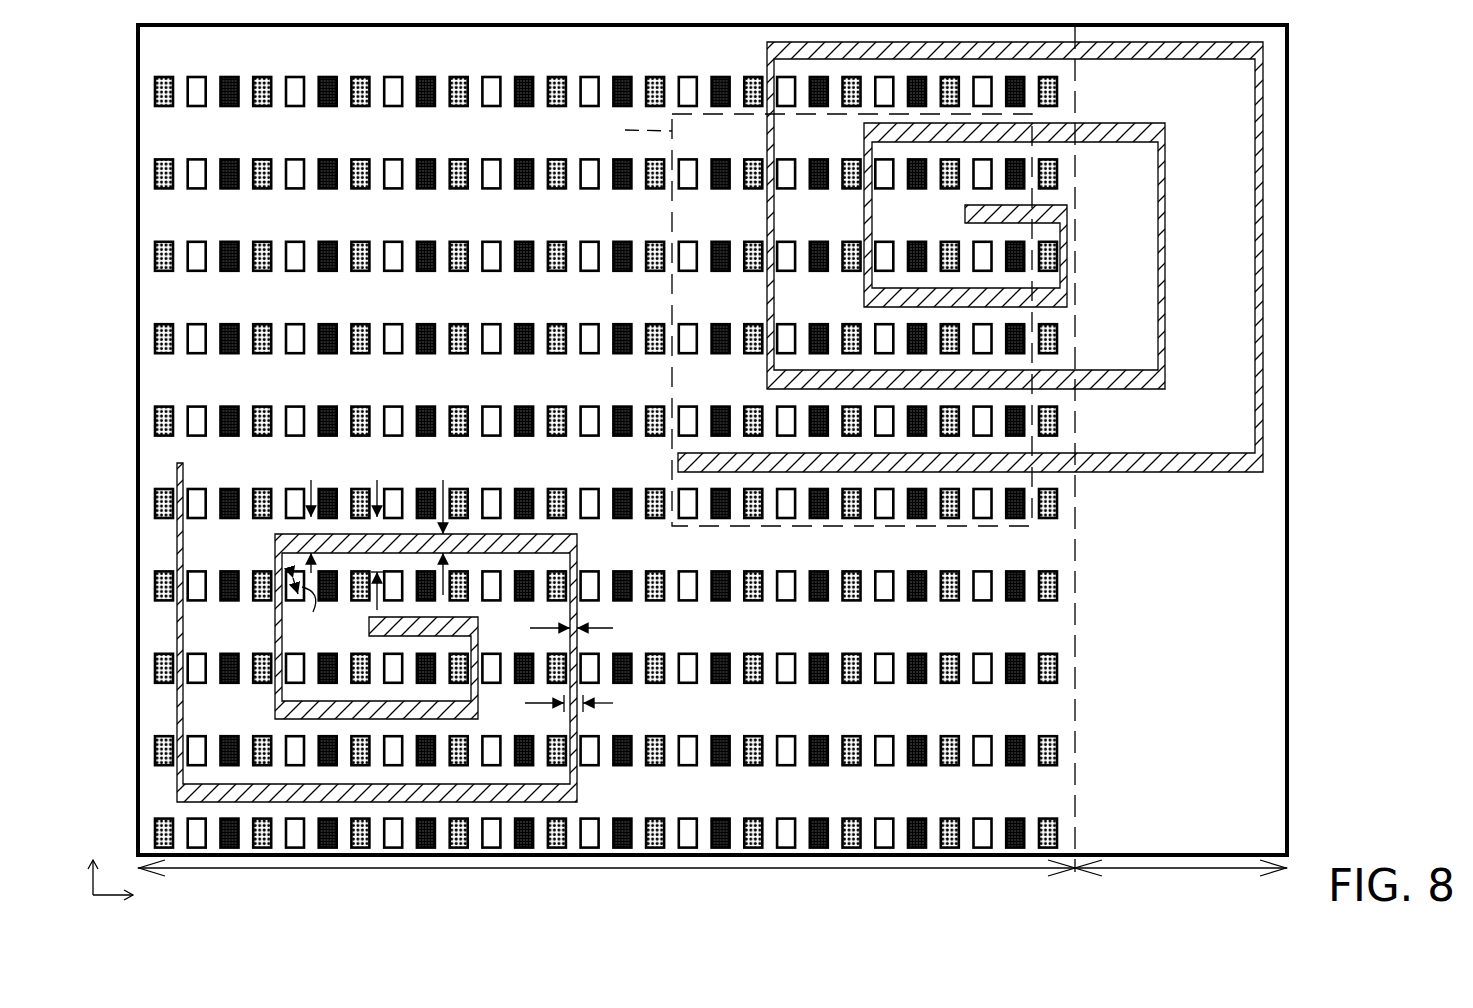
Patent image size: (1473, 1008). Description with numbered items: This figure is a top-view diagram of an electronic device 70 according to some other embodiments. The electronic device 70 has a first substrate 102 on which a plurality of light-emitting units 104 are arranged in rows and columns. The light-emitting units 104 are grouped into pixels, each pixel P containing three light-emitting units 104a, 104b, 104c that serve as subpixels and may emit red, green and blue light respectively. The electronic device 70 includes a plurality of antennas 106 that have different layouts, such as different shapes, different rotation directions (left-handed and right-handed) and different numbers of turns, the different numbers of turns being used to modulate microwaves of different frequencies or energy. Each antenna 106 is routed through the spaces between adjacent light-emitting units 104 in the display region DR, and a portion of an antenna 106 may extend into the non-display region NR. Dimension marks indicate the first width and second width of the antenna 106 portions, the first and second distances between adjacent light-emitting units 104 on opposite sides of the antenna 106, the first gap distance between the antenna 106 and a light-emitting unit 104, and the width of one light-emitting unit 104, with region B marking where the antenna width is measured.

The electronic device 70 is at (115, 47).
The first substrate 102 is at (1253, 572).
The light-emitting units 104 is at (792, 495).
The light-emitting unit 104a is at (883, 835).
The light-emitting unit 104b is at (915, 836).
The light-emitting unit 104c is at (957, 835).
The antenna 106 is at (1257, 52).